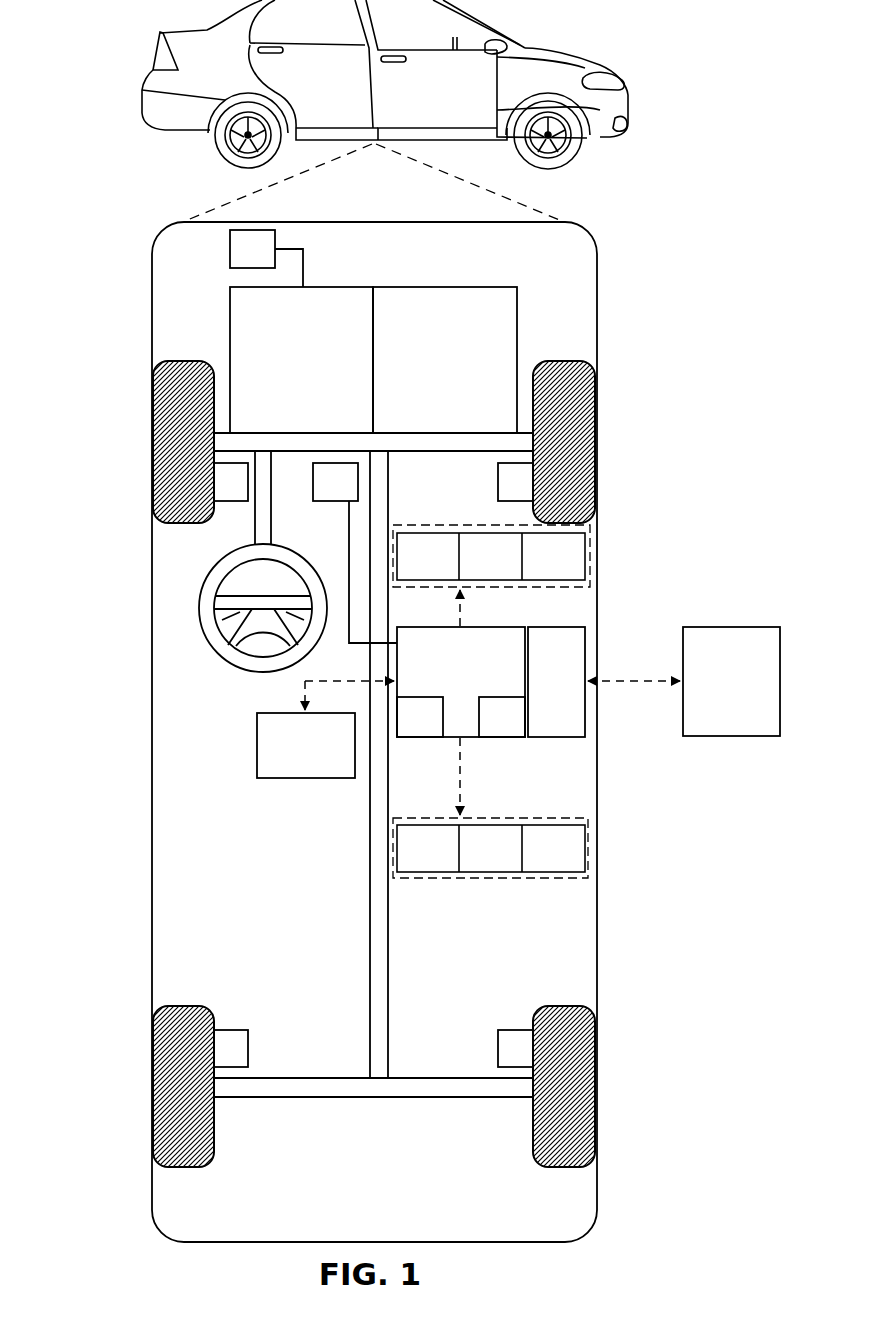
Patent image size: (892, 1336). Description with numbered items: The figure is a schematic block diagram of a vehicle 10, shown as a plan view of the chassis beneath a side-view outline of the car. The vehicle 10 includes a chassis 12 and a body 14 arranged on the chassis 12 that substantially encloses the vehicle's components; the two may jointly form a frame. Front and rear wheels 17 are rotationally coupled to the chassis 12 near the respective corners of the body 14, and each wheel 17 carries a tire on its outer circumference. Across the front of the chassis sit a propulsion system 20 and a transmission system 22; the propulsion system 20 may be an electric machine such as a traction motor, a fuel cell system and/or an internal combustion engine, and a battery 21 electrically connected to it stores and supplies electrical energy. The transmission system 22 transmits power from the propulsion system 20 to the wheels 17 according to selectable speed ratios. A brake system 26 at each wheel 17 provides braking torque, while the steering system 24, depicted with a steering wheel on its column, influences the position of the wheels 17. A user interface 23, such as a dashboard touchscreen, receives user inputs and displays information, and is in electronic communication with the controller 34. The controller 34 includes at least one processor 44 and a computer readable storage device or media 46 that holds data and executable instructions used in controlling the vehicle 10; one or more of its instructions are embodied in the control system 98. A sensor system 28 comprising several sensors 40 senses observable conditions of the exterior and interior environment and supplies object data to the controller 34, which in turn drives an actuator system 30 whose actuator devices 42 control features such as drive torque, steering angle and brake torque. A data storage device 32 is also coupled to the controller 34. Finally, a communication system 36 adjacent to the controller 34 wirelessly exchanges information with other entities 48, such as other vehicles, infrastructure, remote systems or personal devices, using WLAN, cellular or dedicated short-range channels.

The vehicle 10 is at (152, 64).
The chassis 12 is at (370, 940).
The body 14 is at (152, 800).
The front and rear wheels 17 is at (181, 360).
The propulsion system 20 is at (287, 372).
The battery 21 is at (236, 230).
The transmission system 22 is at (430, 372).
The user interface 23 is at (322, 496).
The steering system 24 is at (281, 518).
The brake system 26 is at (218, 496).
The sensor system 28 is at (470, 526).
The actuator system 30 is at (481, 879).
The data storage device 32 is at (292, 759).
The controller 34 is at (447, 678).
The communication system 36 is at (542, 696).
The sensors 40 is at (491, 556).
The actuator devices 42 is at (491, 848).
The processor 44 is at (406, 732).
The computer readable storage device or media 46 is at (488, 732).
The other entities 48 is at (717, 696).
The control system 98 is at (696, 262).